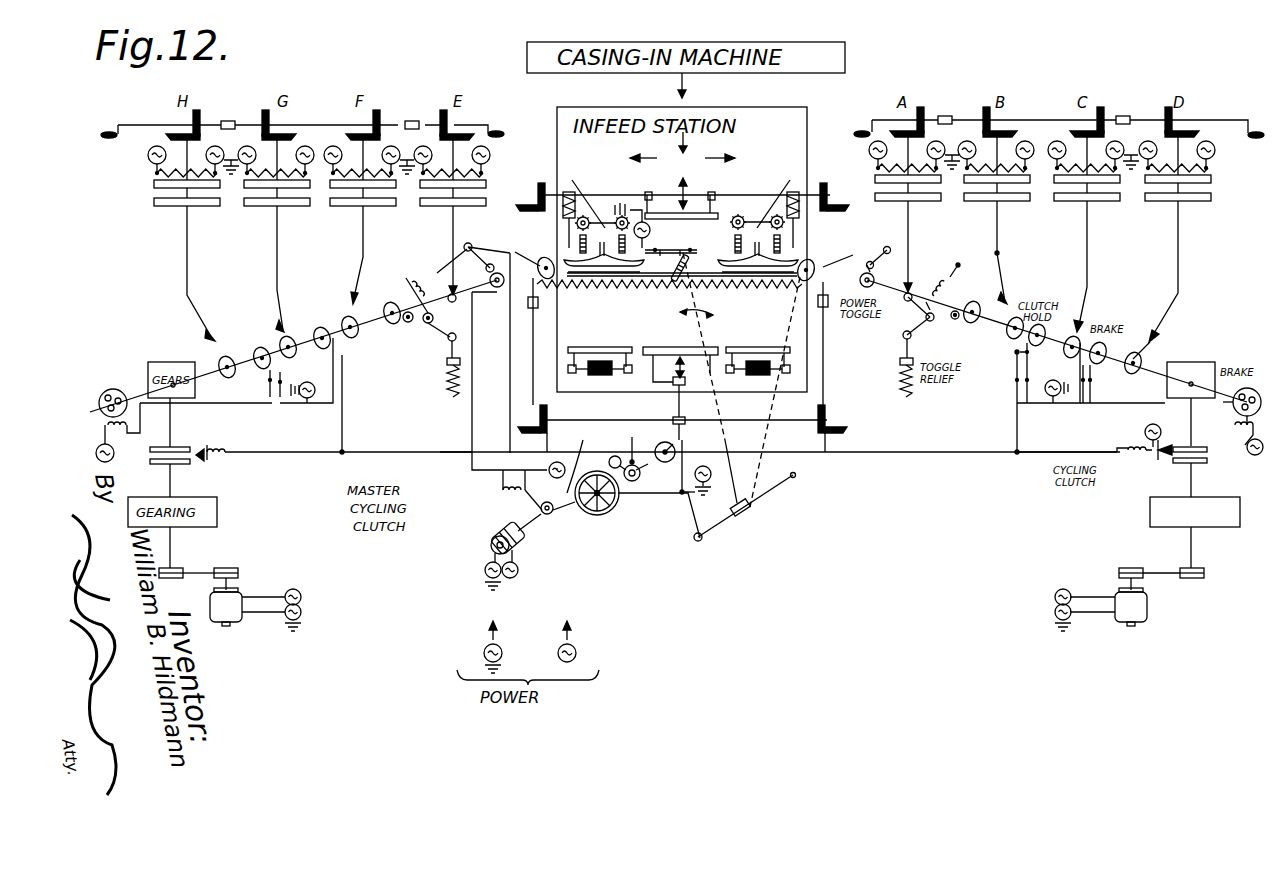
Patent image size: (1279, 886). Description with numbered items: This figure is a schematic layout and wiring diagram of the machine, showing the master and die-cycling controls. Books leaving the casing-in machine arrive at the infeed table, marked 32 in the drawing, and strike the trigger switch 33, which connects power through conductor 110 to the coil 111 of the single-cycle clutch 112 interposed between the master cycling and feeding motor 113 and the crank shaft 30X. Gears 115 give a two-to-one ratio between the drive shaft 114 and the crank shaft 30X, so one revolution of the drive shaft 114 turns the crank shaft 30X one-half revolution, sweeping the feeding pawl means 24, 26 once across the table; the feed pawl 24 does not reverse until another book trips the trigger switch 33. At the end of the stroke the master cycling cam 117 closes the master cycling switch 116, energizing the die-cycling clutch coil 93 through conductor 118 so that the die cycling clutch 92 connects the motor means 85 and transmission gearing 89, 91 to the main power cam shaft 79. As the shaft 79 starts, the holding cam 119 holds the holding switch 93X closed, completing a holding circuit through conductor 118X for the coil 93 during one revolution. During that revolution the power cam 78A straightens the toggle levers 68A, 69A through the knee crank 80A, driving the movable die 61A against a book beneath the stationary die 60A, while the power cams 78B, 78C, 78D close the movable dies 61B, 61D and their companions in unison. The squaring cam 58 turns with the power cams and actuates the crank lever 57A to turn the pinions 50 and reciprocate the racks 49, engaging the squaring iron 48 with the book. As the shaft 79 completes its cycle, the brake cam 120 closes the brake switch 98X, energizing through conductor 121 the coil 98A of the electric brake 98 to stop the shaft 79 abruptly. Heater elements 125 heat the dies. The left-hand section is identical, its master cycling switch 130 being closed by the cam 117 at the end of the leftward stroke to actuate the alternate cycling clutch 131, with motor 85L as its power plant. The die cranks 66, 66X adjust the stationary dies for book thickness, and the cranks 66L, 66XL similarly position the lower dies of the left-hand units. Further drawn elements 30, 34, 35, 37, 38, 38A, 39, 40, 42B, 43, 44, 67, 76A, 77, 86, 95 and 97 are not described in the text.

The feed pawl 24 is at (676, 264).
The feeding pawl means 26 is at (720, 408).
The wheel 30 is at (598, 514).
The crank shaft 30X is at (622, 500).
The infeed station 32 is at (607, 164).
The trigger switch 33 is at (699, 252).
The table 34 is at (658, 327).
The plate 35 is at (686, 216).
The bracket 37 is at (824, 430).
The cam lever 38 is at (815, 266).
The cam lever 38A is at (547, 264).
The shoe 39 is at (612, 286).
The table 40 is at (743, 328).
The motor 42B is at (769, 376).
The guide 43 is at (744, 274).
The guide 44 is at (762, 274).
The squaring iron 48 is at (764, 274).
The racks 49 is at (682, 256).
The pinions 50 is at (740, 218).
The crank lever 57A is at (875, 250).
The squaring cam 58 is at (860, 283).
The stationary die 60A is at (875, 184).
The movable die member 61A is at (877, 202).
The movable die 61B is at (1005, 202).
The movable die 61D is at (1195, 202).
The die crank 66 is at (1256, 132).
The crank 66L is at (497, 131).
The die crank 66X is at (856, 133).
The crank 66XL is at (108, 132).
The pushbutton 67 is at (1175, 123).
The toggle lever 68A is at (922, 293).
The toggle lever 69A is at (911, 340).
The spring 76A is at (900, 386).
The solenoid 77 is at (940, 277).
The power cam 78A is at (995, 293).
The power cam 78B is at (1017, 314).
The power cam 78C is at (1076, 333).
The power cam 78D is at (1148, 318).
The main power cam shaft 79 is at (1140, 368).
The knee crank 80A is at (941, 328).
The motor means 85 is at (1147, 605).
The motor 85L is at (234, 620).
The pulley 86 is at (1156, 567).
The transmission gearing 89 is at (1199, 532).
The transmission gearing 91 is at (1222, 527).
The die cycling clutch 92 is at (1199, 466).
The die-cycling clutch coil 93 is at (1124, 444).
The holding switch 93X is at (1014, 355).
The gears 95 is at (1214, 361).
The gears 97 is at (1194, 362).
The electric brake 98 is at (1254, 381).
The brake coil 98A is at (1208, 450).
The brake switch 98X is at (1092, 382).
The conductor 110 is at (472, 420).
The clutch coil 111 is at (501, 497).
The single-cycle clutch 112 is at (546, 523).
The master cycling and feeding motor 113 is at (516, 566).
The drive shaft 114 is at (583, 440).
The gears 115 is at (636, 478).
The master cycling switch 116 is at (682, 444).
The master cycling cam 117 is at (673, 420).
The conductor 118 is at (988, 456).
The conductor 118X is at (1013, 402).
The holding cam 119 is at (1032, 362).
The brake cam 120 is at (1112, 336).
The conductor 121 is at (1146, 408).
The heater elements 125 is at (877, 168).
The master cycling switch 130 is at (632, 440).
The alternate cycling clutch 131 is at (215, 472).